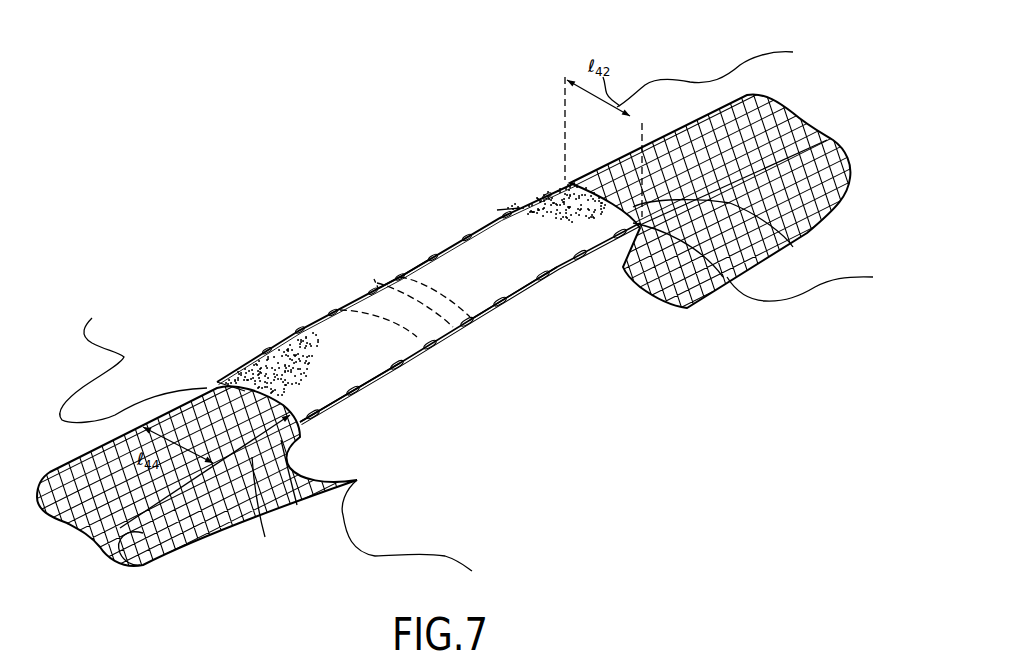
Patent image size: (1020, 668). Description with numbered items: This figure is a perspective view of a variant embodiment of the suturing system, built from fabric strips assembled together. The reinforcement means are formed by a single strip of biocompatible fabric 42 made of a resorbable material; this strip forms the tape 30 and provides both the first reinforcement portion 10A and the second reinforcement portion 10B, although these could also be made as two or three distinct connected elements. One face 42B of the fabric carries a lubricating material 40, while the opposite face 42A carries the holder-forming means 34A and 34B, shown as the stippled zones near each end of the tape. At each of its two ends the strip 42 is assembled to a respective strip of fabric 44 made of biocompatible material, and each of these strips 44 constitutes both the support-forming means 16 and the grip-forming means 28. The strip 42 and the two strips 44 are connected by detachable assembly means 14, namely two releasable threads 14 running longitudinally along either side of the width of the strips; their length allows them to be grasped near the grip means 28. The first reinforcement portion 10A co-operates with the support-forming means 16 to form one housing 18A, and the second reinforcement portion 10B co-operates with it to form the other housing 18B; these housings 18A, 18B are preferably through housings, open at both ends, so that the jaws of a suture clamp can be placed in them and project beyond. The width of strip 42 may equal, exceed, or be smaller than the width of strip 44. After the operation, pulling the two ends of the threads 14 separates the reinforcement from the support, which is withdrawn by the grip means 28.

The first reinforcement portion 10A is at (345, 331).
The second reinforcement portion 10B is at (472, 256).
The detachable assembly means 14 is at (758, 54).
The support-forming means 16 is at (431, 232).
The first housing 18A is at (262, 525).
The second housing 18B is at (783, 233).
The grip-forming means 28 is at (186, 549).
The tape 30 is at (376, 287).
The holder-forming means 34A is at (217, 381).
The holder-forming means 34B is at (606, 180).
The lubricating material 40 is at (517, 207).
The strip of biocompatible fabric 42 is at (460, 330).
The face of the fabric strip 42A is at (410, 363).
The face of the fabric strip 42B is at (398, 282).
The strip of fabric 44 is at (802, 104).